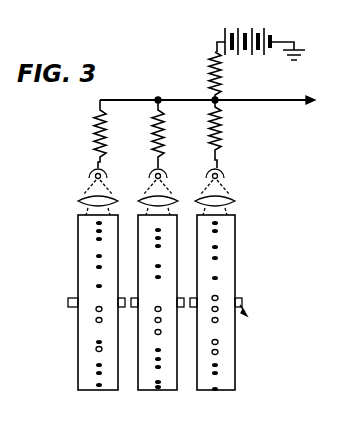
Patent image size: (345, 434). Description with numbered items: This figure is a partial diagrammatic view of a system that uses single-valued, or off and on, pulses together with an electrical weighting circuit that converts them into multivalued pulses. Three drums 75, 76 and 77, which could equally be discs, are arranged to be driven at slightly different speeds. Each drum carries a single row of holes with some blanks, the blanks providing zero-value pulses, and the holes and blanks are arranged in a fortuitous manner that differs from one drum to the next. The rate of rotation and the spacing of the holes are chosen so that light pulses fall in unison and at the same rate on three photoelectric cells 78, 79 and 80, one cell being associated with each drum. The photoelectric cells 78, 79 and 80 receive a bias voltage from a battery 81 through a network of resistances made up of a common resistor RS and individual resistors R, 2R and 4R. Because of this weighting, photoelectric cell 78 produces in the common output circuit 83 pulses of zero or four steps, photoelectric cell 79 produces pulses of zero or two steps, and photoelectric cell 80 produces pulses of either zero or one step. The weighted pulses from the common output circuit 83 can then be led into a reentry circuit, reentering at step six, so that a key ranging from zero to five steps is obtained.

The drum 75 is at (82, 392).
The drum 76 is at (142, 392).
The drum 77 is at (200, 392).
The photoelectric cell 78 is at (92, 172).
The photoelectric cell 79 is at (163, 171).
The photoelectric cell 80 is at (221, 171).
The battery 81 is at (243, 30).
The common output circuit 83 is at (283, 100).
The individual resistor R is at (91, 134).
The individual resistor 2R is at (152, 141).
The individual resistor 4R is at (209, 141).
The common resistor RS is at (228, 76).